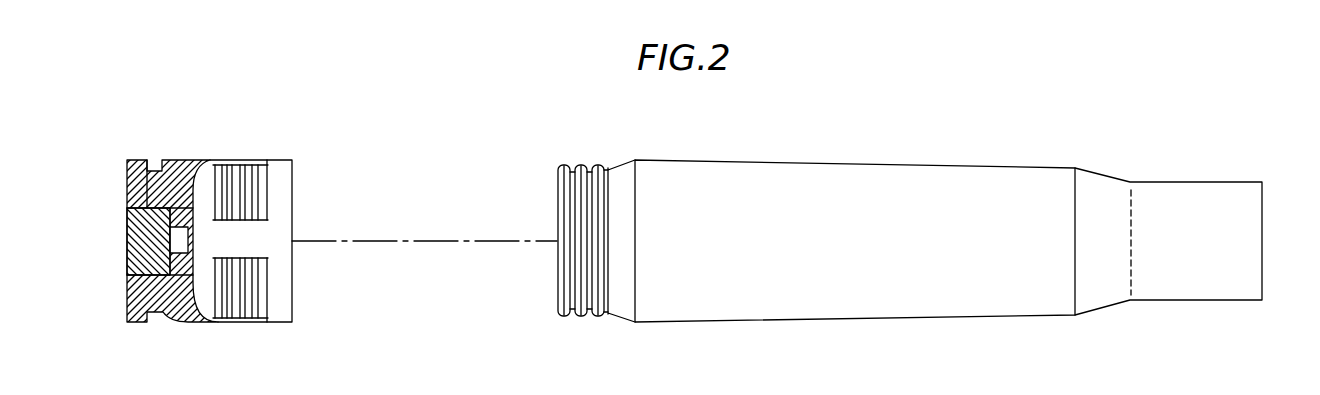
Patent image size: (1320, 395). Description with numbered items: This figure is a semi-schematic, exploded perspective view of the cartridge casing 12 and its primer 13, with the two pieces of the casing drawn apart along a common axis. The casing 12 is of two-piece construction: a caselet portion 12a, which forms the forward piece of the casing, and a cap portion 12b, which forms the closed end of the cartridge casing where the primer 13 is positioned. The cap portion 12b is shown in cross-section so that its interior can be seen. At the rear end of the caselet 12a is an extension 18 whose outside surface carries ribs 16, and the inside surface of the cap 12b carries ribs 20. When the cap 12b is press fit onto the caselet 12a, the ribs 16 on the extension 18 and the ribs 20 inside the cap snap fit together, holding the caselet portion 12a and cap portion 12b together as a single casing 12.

The casing 12 is at (530, 123).
The caselet portion 12a is at (878, 254).
The cap portion 12b is at (266, 251).
The primer 13 is at (153, 210).
The ribs 16 is at (581, 318).
The extension 18 is at (556, 330).
The ribs 20 is at (233, 277).